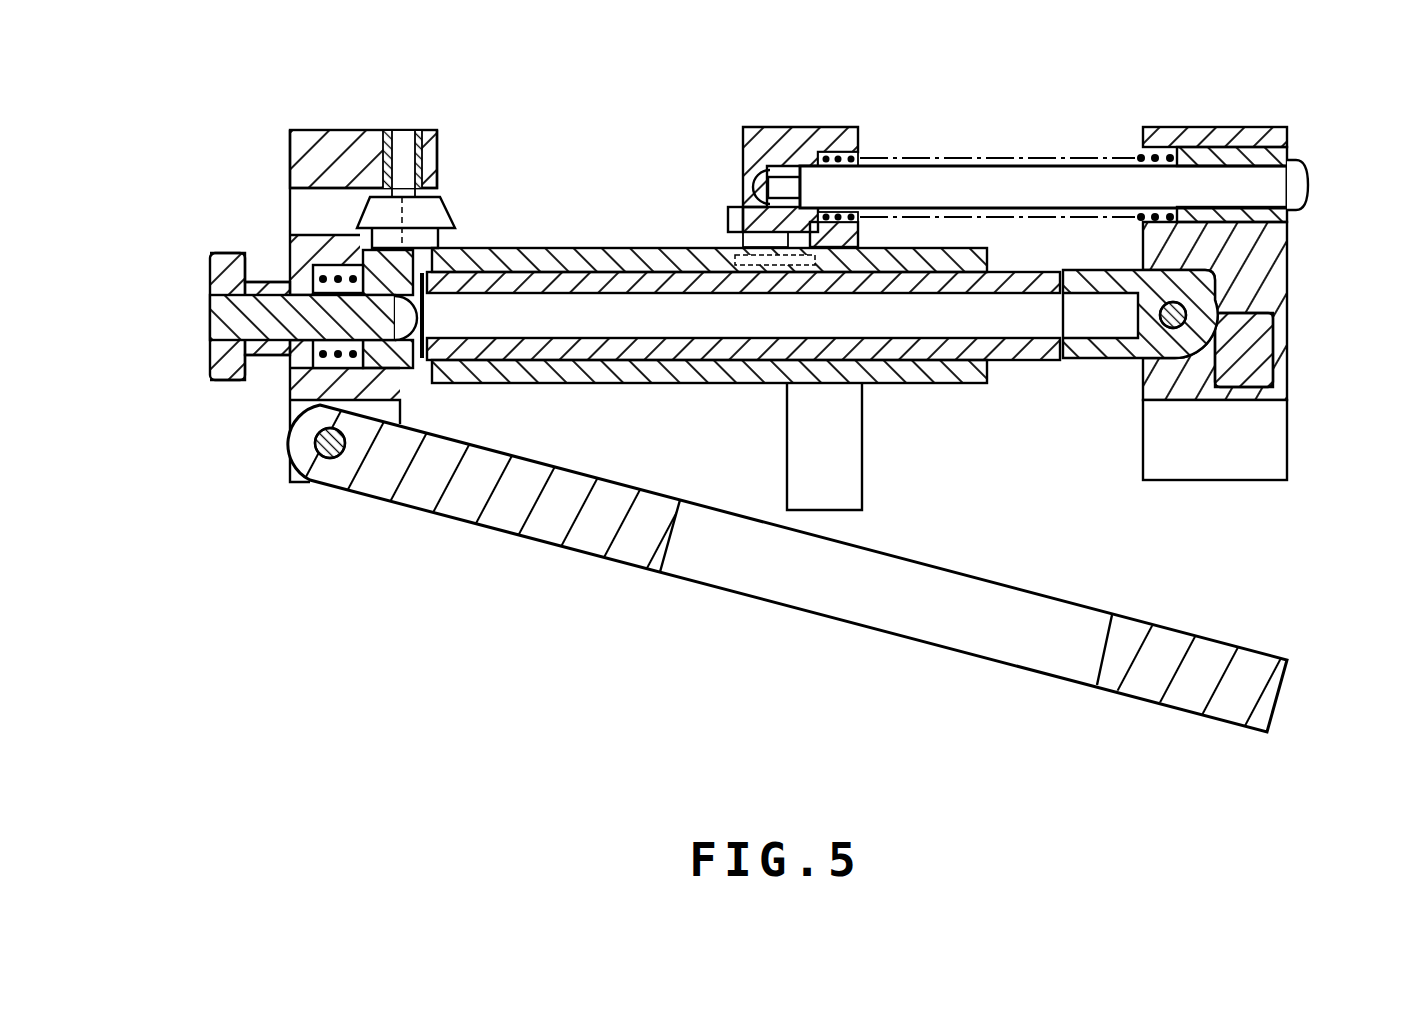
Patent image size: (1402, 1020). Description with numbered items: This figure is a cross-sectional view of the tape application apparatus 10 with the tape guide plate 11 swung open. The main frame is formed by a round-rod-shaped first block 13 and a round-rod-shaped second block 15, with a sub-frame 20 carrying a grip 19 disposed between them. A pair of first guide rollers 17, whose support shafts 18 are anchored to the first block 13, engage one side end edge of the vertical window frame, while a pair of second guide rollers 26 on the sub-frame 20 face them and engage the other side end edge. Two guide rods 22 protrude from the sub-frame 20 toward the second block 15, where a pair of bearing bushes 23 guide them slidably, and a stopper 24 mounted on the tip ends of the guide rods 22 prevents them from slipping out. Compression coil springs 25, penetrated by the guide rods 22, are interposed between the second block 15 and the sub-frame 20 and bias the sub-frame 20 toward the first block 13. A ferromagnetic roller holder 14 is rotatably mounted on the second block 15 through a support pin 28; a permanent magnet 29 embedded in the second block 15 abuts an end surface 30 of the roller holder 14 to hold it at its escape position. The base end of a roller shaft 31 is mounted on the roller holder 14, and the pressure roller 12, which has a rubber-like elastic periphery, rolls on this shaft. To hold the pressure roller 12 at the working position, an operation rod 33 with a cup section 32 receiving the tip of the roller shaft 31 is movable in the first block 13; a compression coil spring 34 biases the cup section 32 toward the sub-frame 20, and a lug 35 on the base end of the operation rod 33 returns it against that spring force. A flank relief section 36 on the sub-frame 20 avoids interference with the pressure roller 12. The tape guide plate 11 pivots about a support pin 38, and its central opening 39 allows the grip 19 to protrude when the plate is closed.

The tape application apparatus 10 is at (462, 592).
The tape guide plate 11 is at (1190, 640).
The pressure roller 12 is at (920, 383).
The first block 13 is at (326, 142).
The roller holder 14 is at (1217, 280).
The second block 15 is at (1241, 135).
The first guide rollers 17 is at (440, 212).
The support shafts 18 is at (403, 138).
The grip 19 is at (832, 502).
The sub-frame 20 is at (788, 128).
The guide rods 22 is at (947, 178).
The bearing bushes 23 is at (1195, 160).
The stopper 24 is at (1296, 165).
The compression coil springs 25 is at (1140, 156).
The second guide rollers 26 is at (728, 220).
The support pin 28 is at (1187, 297).
The permanent magnet 29 is at (1257, 353).
The end surface 30 is at (1104, 366).
The roller shaft 31 is at (650, 320).
The cup section 32 is at (400, 360).
The operation rod 33 is at (230, 322).
The compression coil spring 34 is at (333, 266).
The lug 35 is at (228, 368).
The flank relief section 36 is at (843, 257).
The support pin 38 is at (328, 460).
The opening 39 is at (740, 570).